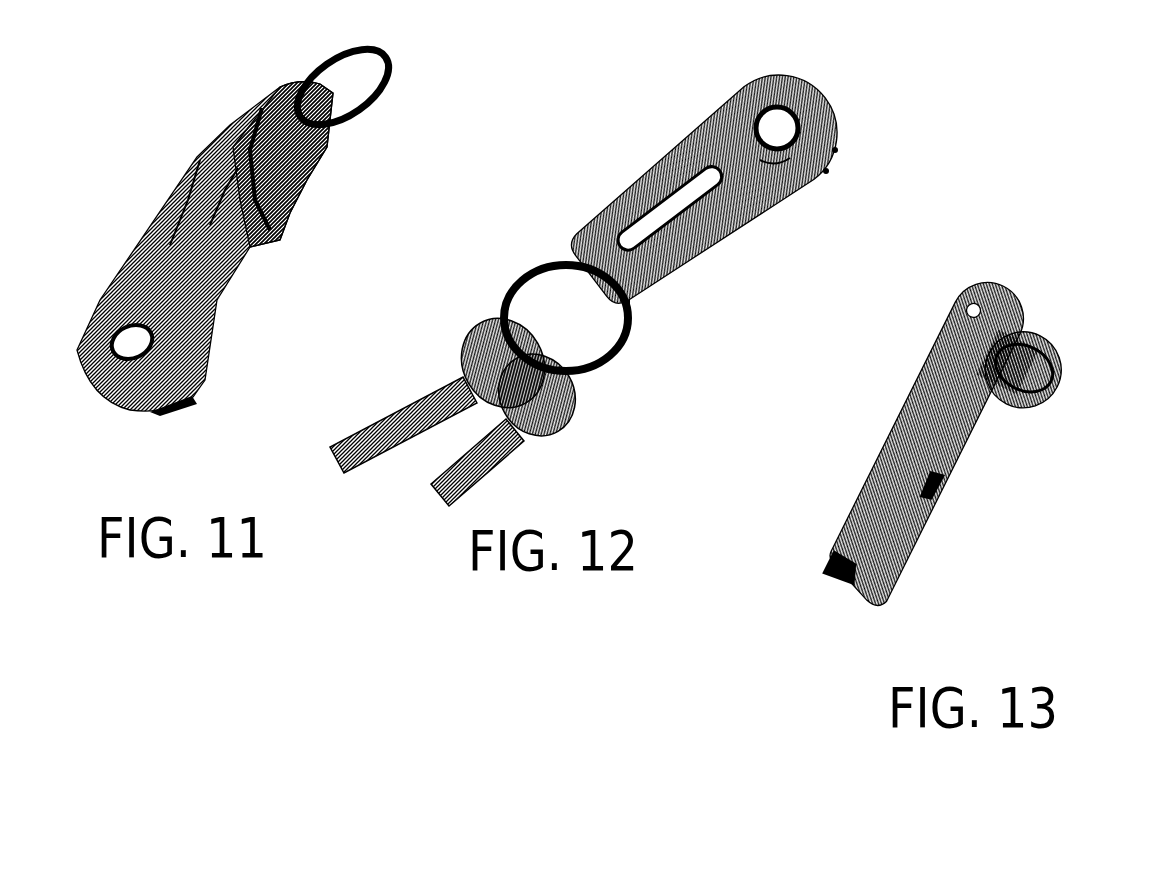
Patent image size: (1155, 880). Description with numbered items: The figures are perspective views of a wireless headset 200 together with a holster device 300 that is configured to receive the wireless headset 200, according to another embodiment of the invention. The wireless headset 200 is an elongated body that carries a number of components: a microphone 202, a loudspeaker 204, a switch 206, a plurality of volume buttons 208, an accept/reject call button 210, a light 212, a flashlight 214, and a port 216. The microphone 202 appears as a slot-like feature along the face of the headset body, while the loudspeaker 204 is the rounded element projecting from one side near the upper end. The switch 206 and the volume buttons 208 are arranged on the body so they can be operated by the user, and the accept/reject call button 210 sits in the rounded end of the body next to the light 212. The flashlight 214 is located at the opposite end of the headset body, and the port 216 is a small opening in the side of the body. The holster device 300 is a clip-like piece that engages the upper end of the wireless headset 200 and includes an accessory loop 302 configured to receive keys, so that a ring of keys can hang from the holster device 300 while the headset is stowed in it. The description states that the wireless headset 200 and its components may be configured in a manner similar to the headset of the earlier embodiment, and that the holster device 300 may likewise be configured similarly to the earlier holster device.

In FIG. 11, the wireless headset 200 is at (240, 305).
In FIG. 12, the wireless headset 200 is at (852, 96).
In FIG. 13, the wireless headset 200 is at (926, 439).
In FIG. 11, the microphone 202 is at (232, 168).
In FIG. 12, the microphone 202 is at (597, 230).
In FIG. 11, the loudspeaker 204 is at (195, 388).
In FIG. 13, the loudspeaker 204 is at (1047, 358).
In FIG. 11, the switch 206 is at (193, 205).
In FIG. 11, the volume buttons 208 is at (178, 373).
In FIG. 12, the volume buttons 208 is at (838, 150).
In FIG. 13, the volume buttons 208 is at (983, 303).
In FIG. 12, the accept/reject call button 210 is at (763, 110).
In FIG. 12, the light 212 is at (777, 152).
In FIG. 13, the flashlight 214 is at (853, 590).
In FIG. 13, the port 216 is at (943, 490).
In FIG. 11, the holster device 300 is at (336, 167).
In FIG. 12, the holster device 300 is at (670, 330).
In FIG. 11, the accessory loop 302 is at (387, 84).